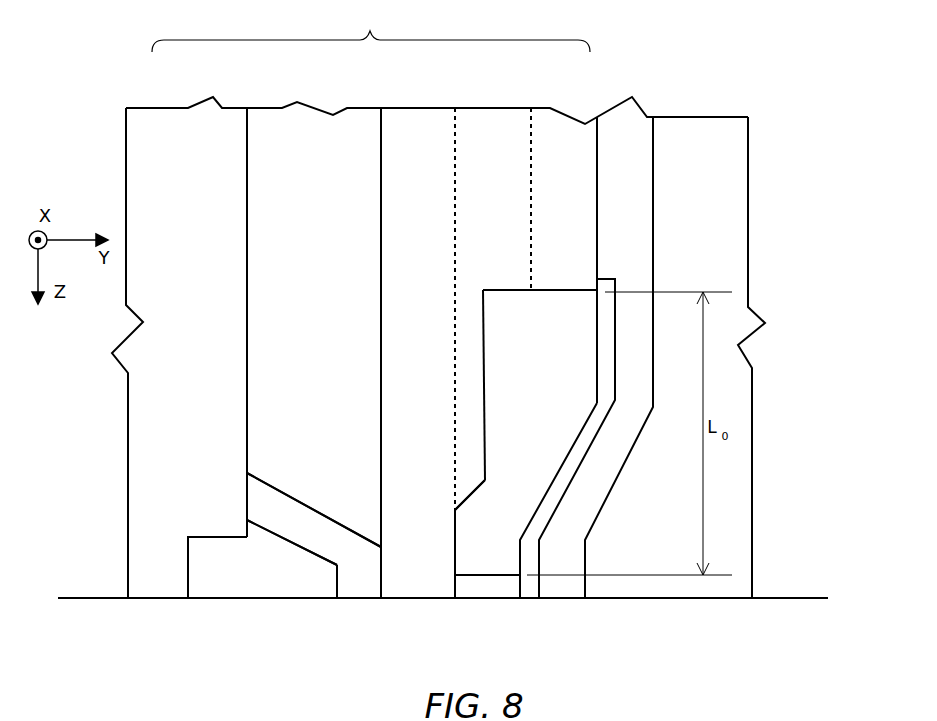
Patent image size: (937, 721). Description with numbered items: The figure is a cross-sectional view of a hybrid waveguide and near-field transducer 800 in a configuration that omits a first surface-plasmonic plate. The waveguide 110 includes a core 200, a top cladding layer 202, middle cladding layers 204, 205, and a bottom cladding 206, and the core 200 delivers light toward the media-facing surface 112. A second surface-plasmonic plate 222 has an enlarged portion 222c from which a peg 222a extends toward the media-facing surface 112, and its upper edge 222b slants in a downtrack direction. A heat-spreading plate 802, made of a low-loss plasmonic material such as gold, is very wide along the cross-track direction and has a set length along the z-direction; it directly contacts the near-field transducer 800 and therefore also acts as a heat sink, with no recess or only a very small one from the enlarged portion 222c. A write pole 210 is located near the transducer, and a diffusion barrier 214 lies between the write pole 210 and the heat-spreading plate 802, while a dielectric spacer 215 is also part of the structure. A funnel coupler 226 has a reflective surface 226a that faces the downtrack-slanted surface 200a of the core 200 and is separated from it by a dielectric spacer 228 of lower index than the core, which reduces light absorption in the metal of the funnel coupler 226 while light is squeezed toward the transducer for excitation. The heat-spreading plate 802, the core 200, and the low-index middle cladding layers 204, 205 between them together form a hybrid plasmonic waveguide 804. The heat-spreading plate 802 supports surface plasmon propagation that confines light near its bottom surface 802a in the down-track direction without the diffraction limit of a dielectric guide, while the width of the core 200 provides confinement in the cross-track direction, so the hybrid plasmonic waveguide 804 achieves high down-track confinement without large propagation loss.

The waveguide 110 is at (371, 30).
The media-facing surface 112 is at (760, 600).
The core 200 is at (262, 117).
The downtrack-slanted surface 200a is at (355, 528).
The top cladding layer 202 is at (540, 118).
The middle cladding layer 204 is at (398, 117).
The middle cladding layer 205 is at (468, 113).
The bottom cladding 206 is at (196, 117).
The write pole 210 is at (567, 590).
The diffusion barrier 214 is at (531, 590).
The dielectric spacer 215 is at (512, 591).
The second surface-plasmonic plate 222 is at (457, 520).
The peg 222a is at (466, 590).
The upper edge 222b is at (460, 497).
The enlarged portion 222c is at (460, 548).
The funnel coupler 226 is at (222, 590).
The reflective surface 226a is at (318, 554).
The dielectric spacer 228 is at (310, 525).
The near-field transducer 800 is at (520, 609).
The heat-spreading plate 802 is at (572, 287).
The bottom surface 802a is at (483, 296).
The hybrid plasmonic waveguide 804 is at (434, 376).